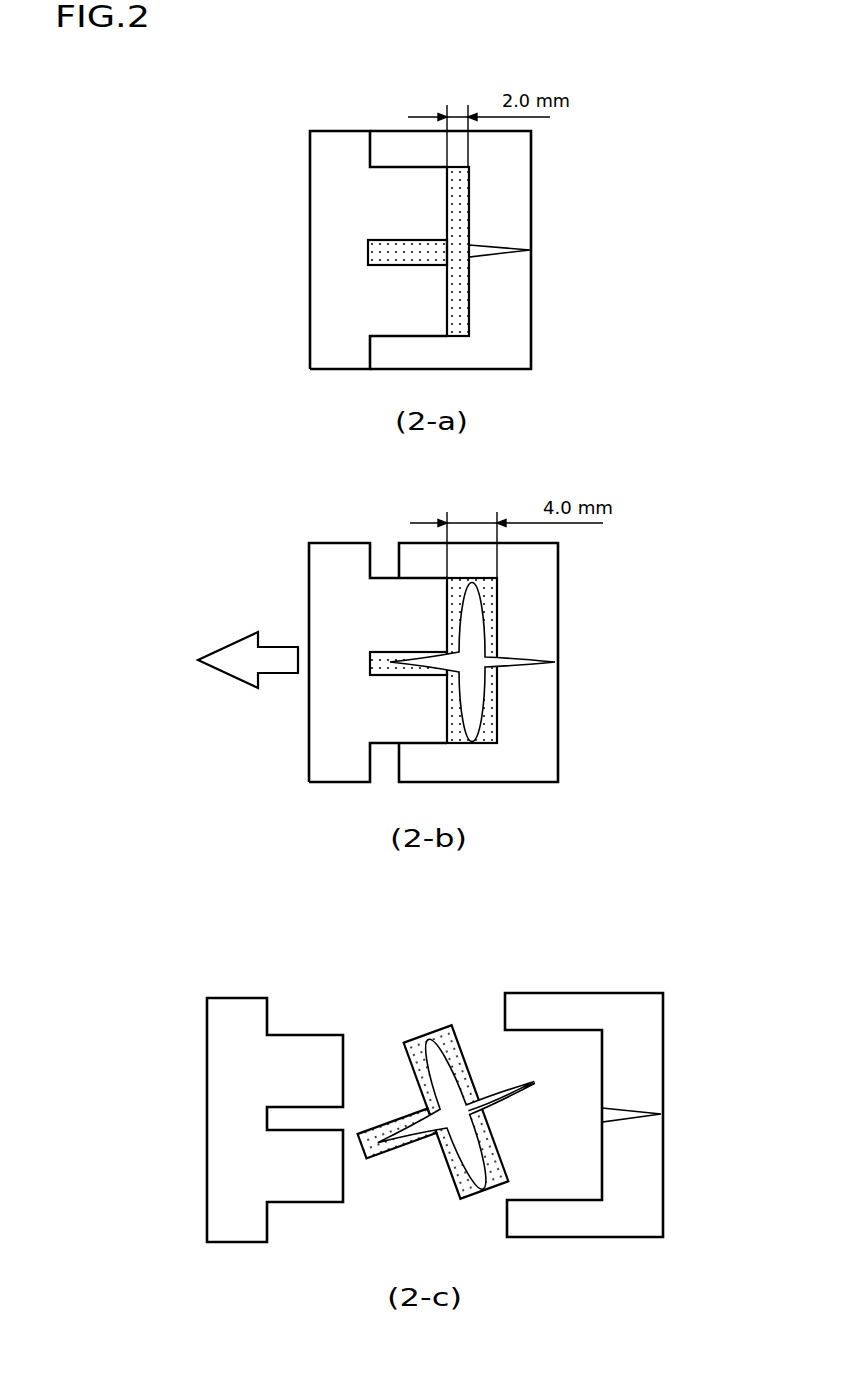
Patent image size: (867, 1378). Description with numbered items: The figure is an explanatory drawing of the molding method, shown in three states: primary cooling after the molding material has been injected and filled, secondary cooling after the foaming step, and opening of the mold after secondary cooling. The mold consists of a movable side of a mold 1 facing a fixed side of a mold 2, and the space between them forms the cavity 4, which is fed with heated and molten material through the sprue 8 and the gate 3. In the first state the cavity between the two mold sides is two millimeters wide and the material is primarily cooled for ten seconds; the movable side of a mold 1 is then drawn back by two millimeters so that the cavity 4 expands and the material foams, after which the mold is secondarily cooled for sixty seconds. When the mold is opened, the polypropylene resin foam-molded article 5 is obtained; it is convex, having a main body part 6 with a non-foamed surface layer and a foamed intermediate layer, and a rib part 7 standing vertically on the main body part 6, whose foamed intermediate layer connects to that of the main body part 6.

The movable side of a mold 1 is at (310, 167).
The fixed side of a mold 2 is at (531, 168).
The gate 3 is at (531, 246).
The cavity 4 is at (469, 323).
The polypropylene resin foam-molded article 5 is at (420, 1032).
The main body part 6 is at (463, 1182).
The rib part 7 is at (387, 1157).
The sprue 8 is at (518, 1088).